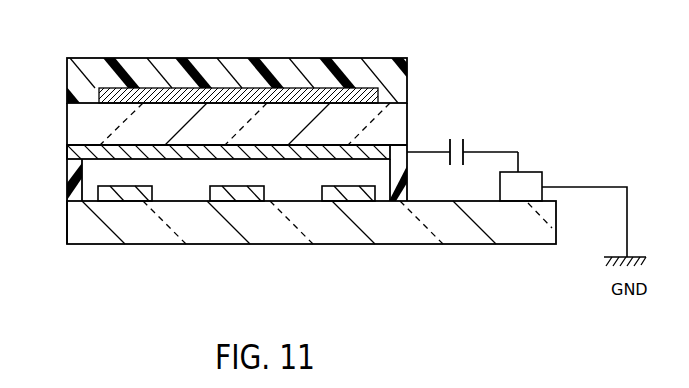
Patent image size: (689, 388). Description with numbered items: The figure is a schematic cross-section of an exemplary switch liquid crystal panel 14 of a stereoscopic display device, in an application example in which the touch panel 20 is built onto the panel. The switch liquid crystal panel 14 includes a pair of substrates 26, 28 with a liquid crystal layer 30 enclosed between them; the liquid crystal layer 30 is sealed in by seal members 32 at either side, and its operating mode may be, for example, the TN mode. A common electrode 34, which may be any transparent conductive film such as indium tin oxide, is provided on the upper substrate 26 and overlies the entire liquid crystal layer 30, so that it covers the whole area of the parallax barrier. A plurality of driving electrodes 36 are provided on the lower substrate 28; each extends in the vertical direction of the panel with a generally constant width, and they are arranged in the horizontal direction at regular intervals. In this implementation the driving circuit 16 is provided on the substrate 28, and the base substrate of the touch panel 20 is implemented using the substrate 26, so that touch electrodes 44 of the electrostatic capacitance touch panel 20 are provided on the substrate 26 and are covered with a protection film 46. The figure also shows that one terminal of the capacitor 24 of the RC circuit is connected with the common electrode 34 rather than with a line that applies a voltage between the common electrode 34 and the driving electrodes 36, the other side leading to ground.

The switch liquid crystal panel 14 is at (67, 102).
The driving circuit 16 is at (522, 183).
The touch panel 20 is at (408, 58).
The capacitor 24 is at (467, 143).
The substrate 26 is at (92, 115).
The substrate 28 is at (296, 230).
The liquid crystal layer 30 is at (197, 180).
The seal members 32 is at (397, 203).
The common electrode 34 is at (165, 150).
The driving electrodes 36 is at (125, 198).
The touch electrodes 44 is at (139, 101).
The protection film 46 is at (383, 78).